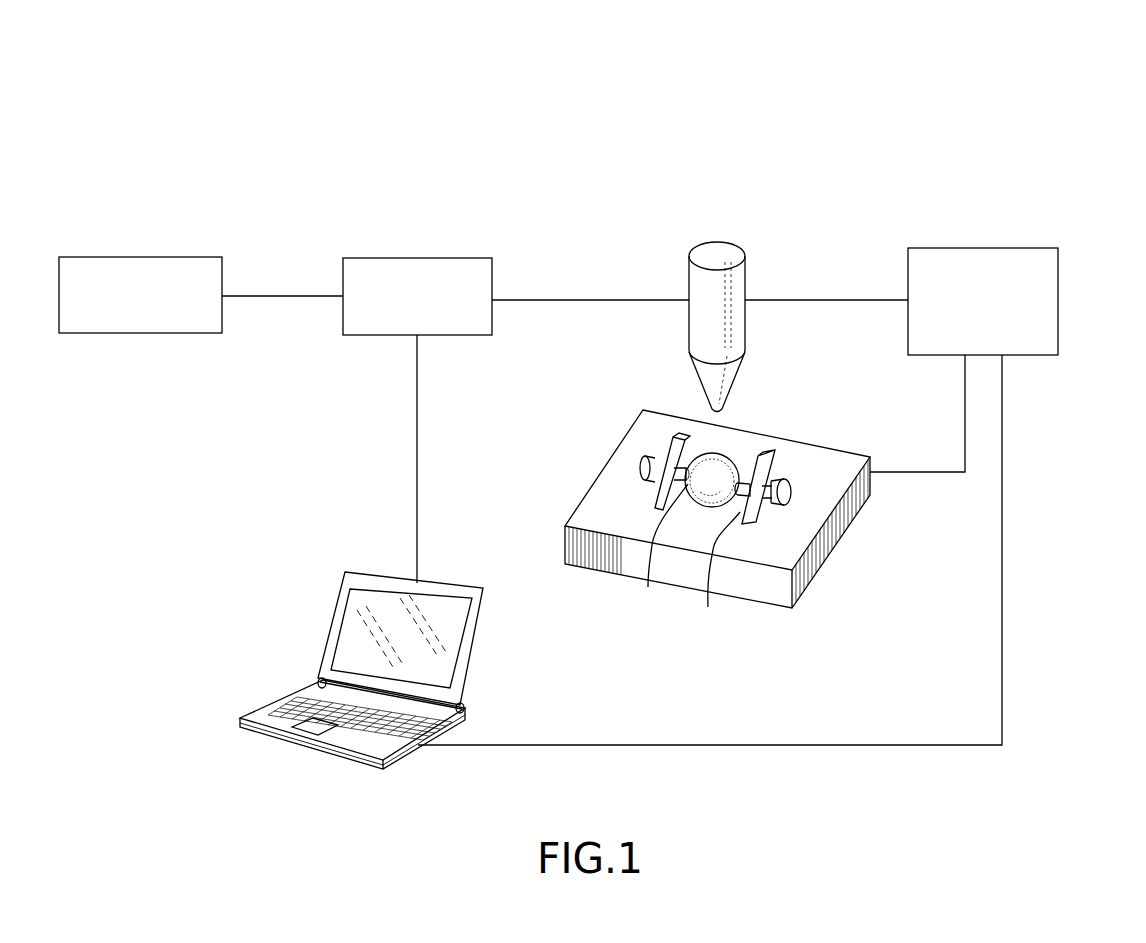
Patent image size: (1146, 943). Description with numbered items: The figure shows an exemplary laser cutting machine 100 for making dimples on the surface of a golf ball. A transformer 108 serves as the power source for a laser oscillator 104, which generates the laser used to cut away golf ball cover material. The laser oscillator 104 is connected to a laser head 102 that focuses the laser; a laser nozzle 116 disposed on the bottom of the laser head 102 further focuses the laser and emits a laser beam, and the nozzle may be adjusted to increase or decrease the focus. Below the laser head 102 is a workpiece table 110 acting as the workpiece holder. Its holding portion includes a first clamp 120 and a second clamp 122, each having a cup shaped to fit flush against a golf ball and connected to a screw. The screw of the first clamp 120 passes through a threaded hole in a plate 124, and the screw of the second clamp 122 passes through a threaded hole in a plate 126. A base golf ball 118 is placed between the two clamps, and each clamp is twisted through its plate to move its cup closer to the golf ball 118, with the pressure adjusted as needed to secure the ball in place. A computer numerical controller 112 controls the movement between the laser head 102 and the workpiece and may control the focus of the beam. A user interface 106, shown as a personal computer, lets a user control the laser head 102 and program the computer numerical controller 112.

The laser cutting machine 100 is at (1062, 142).
The laser head 102 is at (681, 285).
The laser oscillator 104 is at (417, 258).
The user interface 106 is at (473, 657).
The transformer 108 is at (140, 257).
The workpiece table 110 is at (828, 538).
The computer numerical controller 112 is at (985, 248).
The laser nozzle 116 is at (700, 379).
The base golf ball 118 is at (743, 453).
The first clamp 120 is at (658, 553).
The second clamp 122 is at (717, 577).
The plate 124 is at (688, 440).
The plate 126 is at (776, 451).